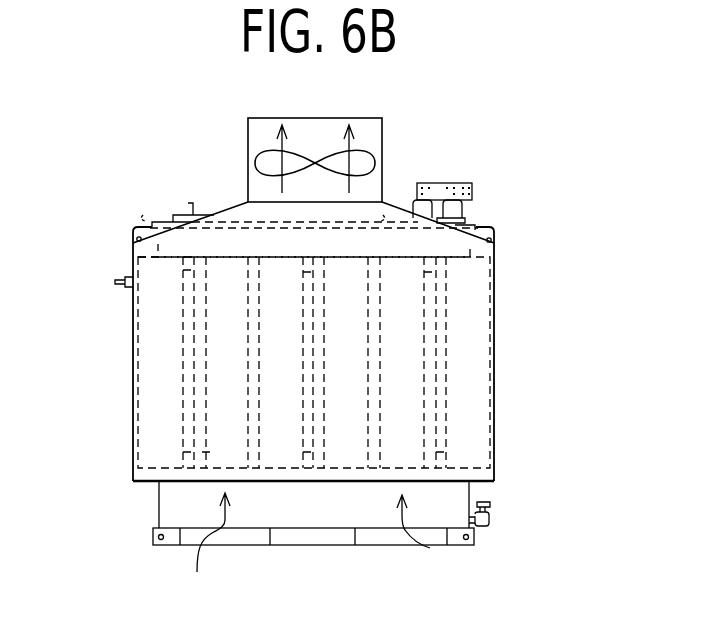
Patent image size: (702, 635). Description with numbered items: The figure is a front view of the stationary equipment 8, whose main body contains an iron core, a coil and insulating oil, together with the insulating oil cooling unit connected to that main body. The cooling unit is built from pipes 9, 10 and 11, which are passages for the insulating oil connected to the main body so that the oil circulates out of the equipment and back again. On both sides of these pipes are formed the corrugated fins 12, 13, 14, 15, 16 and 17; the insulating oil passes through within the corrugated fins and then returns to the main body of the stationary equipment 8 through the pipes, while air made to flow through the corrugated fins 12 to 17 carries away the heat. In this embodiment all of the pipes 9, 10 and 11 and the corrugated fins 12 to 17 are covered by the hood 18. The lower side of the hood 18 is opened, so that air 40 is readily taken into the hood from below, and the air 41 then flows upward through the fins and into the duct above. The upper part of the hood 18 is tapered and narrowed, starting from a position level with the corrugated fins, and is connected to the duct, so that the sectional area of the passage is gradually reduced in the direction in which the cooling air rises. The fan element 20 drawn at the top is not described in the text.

The stationary equipment 8 is at (443, 242).
The pipe 9 is at (440, 418).
The pipe 10 is at (302, 432).
The pipe 11 is at (187, 417).
The corrugated fin 12 is at (477, 378).
The corrugated fin 13 is at (398, 432).
The corrugated fin 14 is at (352, 432).
The corrugated fin 15 is at (275, 432).
The corrugated fin 16 is at (228, 432).
The corrugated fin 17 is at (150, 377).
The hood 18 is at (228, 215).
The fan 20 is at (362, 158).
The air 40 is at (430, 548).
The air 41 is at (278, 142).